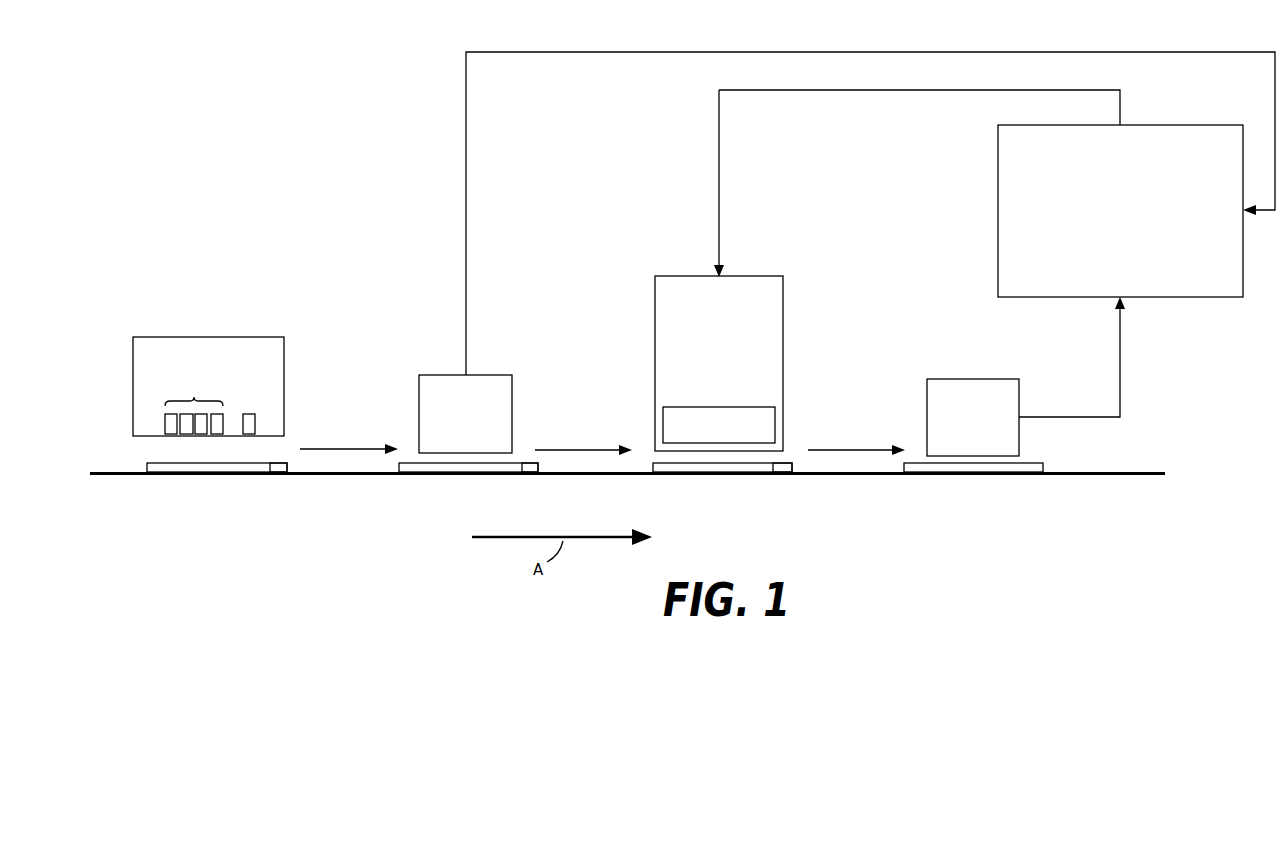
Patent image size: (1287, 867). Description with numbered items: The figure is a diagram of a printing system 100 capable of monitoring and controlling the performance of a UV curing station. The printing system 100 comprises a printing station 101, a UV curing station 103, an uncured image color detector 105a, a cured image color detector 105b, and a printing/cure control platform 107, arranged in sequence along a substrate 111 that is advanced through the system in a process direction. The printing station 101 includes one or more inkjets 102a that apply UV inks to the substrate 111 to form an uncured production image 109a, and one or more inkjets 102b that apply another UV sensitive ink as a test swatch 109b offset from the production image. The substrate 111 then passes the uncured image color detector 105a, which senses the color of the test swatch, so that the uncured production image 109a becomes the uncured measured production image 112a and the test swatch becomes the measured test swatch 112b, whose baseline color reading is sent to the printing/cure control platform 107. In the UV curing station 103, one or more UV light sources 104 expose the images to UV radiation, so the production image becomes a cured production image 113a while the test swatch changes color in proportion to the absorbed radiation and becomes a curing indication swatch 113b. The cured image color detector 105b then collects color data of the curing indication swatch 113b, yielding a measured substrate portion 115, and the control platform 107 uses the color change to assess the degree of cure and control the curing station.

The printing system 100 is at (396, 112).
The printing station 101 is at (207, 336).
The inkjets 102a is at (194, 397).
The inkjets 102b is at (248, 412).
The UV curing station 103 is at (773, 347).
The UV light sources 104 is at (690, 406).
The uncured image color detector 105a is at (437, 373).
The cured image color detector 105b is at (975, 378).
The printing/cure control platform 107 is at (997, 197).
The uncured production image 109a is at (207, 477).
The test swatch 109b is at (278, 477).
The substrate 111 is at (1070, 478).
The uncured measured production image 112a is at (460, 474).
The measured test swatch 112b is at (530, 477).
The cured production image 113a is at (713, 475).
The curing indication swatch 113b is at (782, 475).
The substrate 115 is at (972, 477).